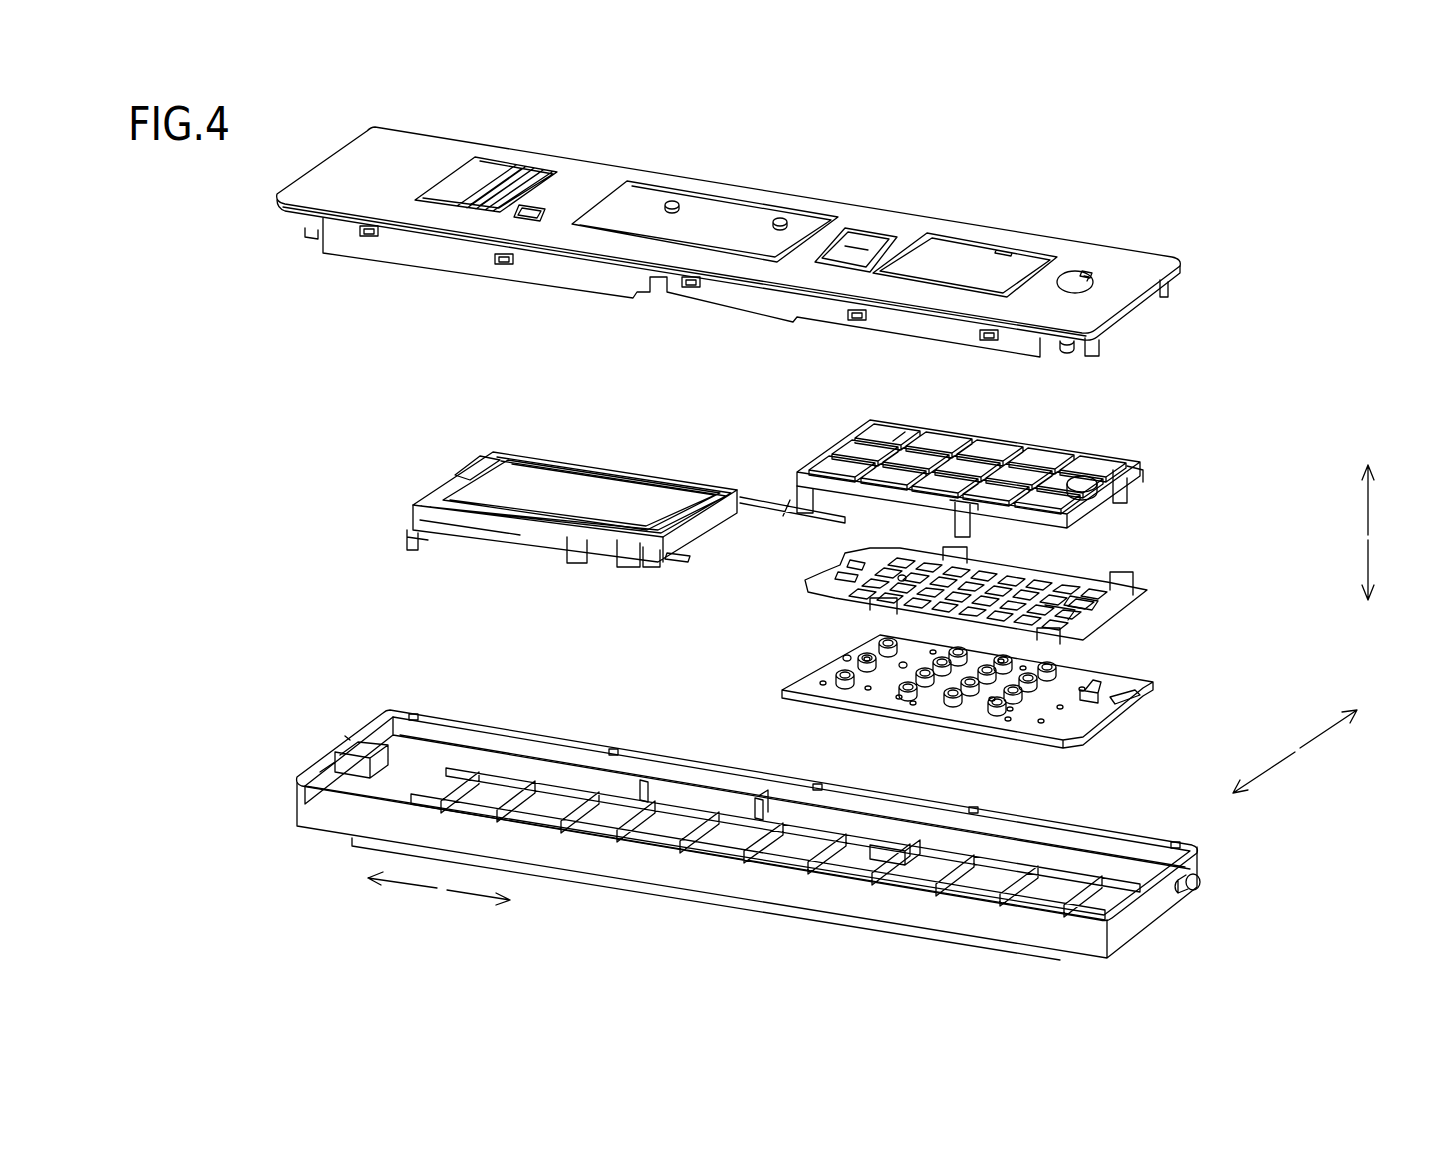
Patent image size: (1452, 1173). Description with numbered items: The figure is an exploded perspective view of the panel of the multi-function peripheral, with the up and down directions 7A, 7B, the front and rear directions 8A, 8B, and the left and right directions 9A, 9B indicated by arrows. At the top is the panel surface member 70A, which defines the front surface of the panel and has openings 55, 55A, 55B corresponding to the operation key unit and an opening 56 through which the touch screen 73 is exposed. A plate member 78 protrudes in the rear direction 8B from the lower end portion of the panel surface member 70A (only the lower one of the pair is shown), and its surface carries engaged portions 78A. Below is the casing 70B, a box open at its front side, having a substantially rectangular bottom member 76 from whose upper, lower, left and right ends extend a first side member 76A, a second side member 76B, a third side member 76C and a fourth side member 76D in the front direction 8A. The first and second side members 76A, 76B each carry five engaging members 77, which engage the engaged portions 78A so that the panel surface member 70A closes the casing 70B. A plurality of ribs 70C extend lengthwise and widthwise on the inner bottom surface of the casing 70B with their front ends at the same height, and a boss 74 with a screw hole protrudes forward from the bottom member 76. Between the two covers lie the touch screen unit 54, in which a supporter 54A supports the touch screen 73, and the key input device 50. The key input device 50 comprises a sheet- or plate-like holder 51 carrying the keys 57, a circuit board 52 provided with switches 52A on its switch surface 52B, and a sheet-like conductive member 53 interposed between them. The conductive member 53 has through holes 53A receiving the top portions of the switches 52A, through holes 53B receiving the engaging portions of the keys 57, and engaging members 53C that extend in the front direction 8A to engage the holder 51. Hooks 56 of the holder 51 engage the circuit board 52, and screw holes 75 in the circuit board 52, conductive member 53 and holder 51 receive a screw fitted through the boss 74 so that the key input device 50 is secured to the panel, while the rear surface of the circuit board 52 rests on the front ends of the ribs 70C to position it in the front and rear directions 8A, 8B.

The key input device 50 is at (1229, 542).
The holder 51 is at (1008, 454).
The circuit board 52 is at (1005, 709).
The switches 52A is at (1003, 712).
The switch surface 52B is at (1113, 690).
The conductive member 53 is at (1004, 586).
The through holes 53A is at (1080, 590).
The through holes 53B is at (1000, 578).
The engaging members 53C is at (875, 578).
The touch screen unit 54 is at (553, 519).
The supporter 54A is at (560, 540).
The opening 55 is at (965, 268).
The opening 55A is at (857, 250).
The opening 55B is at (1080, 272).
The opening 56 is at (710, 222).
The keys 57 is at (885, 425).
The panel surface member 70A is at (1143, 268).
The casing 70B is at (771, 808).
The ribs 70C is at (447, 752).
The touch screen 73 is at (585, 490).
The boss 74 is at (895, 865).
The screw holes 75 is at (905, 432).
The bottom member 76 is at (620, 890).
The first side member 76A is at (737, 770).
The second side member 76B is at (683, 876).
The third side member 76C is at (345, 750).
The fourth side member 76D is at (1163, 900).
The engaging members 77 is at (413, 713).
The plate members 78 is at (437, 252).
The engaged portions 78A is at (369, 240).
The up direction 7A is at (1320, 735).
The down direction 7B is at (1270, 772).
The front direction 8A is at (1350, 505).
The rear direction 8B is at (1350, 568).
The left direction 9A is at (408, 885).
The right direction 9B is at (470, 898).